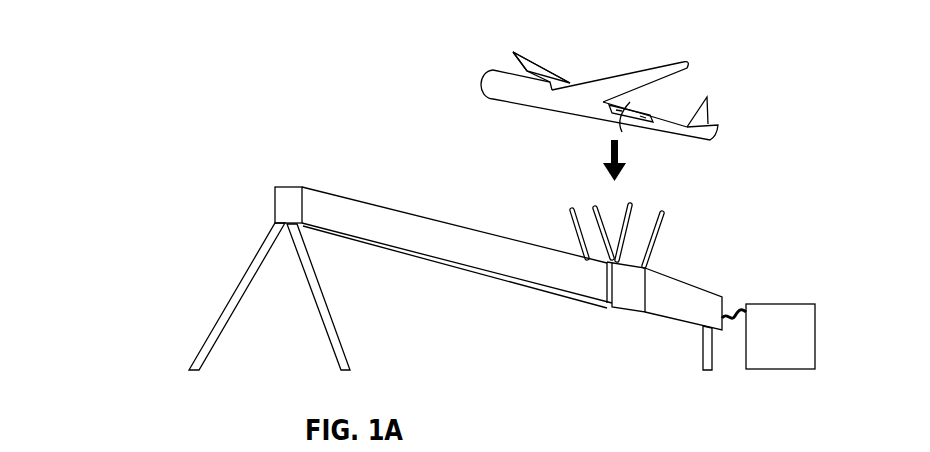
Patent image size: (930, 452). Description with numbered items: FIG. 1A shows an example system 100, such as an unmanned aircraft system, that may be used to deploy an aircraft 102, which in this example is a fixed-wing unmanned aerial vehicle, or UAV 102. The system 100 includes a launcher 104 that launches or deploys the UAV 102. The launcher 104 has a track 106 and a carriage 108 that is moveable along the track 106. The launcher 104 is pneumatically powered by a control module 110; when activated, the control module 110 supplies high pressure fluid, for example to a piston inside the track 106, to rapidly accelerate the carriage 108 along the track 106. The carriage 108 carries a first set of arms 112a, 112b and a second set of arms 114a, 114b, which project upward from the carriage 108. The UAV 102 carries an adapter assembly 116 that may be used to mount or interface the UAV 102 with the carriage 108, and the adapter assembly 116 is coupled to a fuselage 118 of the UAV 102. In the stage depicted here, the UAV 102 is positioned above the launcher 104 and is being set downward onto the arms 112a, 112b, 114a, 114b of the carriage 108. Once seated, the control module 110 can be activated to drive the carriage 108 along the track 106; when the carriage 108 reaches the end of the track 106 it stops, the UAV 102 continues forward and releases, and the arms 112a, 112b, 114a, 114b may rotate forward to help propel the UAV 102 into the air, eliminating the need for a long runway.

The system 100 is at (129, 65).
The aircraft 102 is at (507, 82).
The launcher 104 is at (294, 151).
The track 106 is at (417, 230).
The carriage 108 is at (633, 290).
The control module 110 is at (789, 319).
The first arm 112a is at (573, 210).
The first arm 112b is at (597, 207).
The second arm 114a is at (633, 213).
The second arm 114b is at (663, 230).
The adapter assembly 116 is at (658, 101).
The fuselage 118 is at (547, 90).